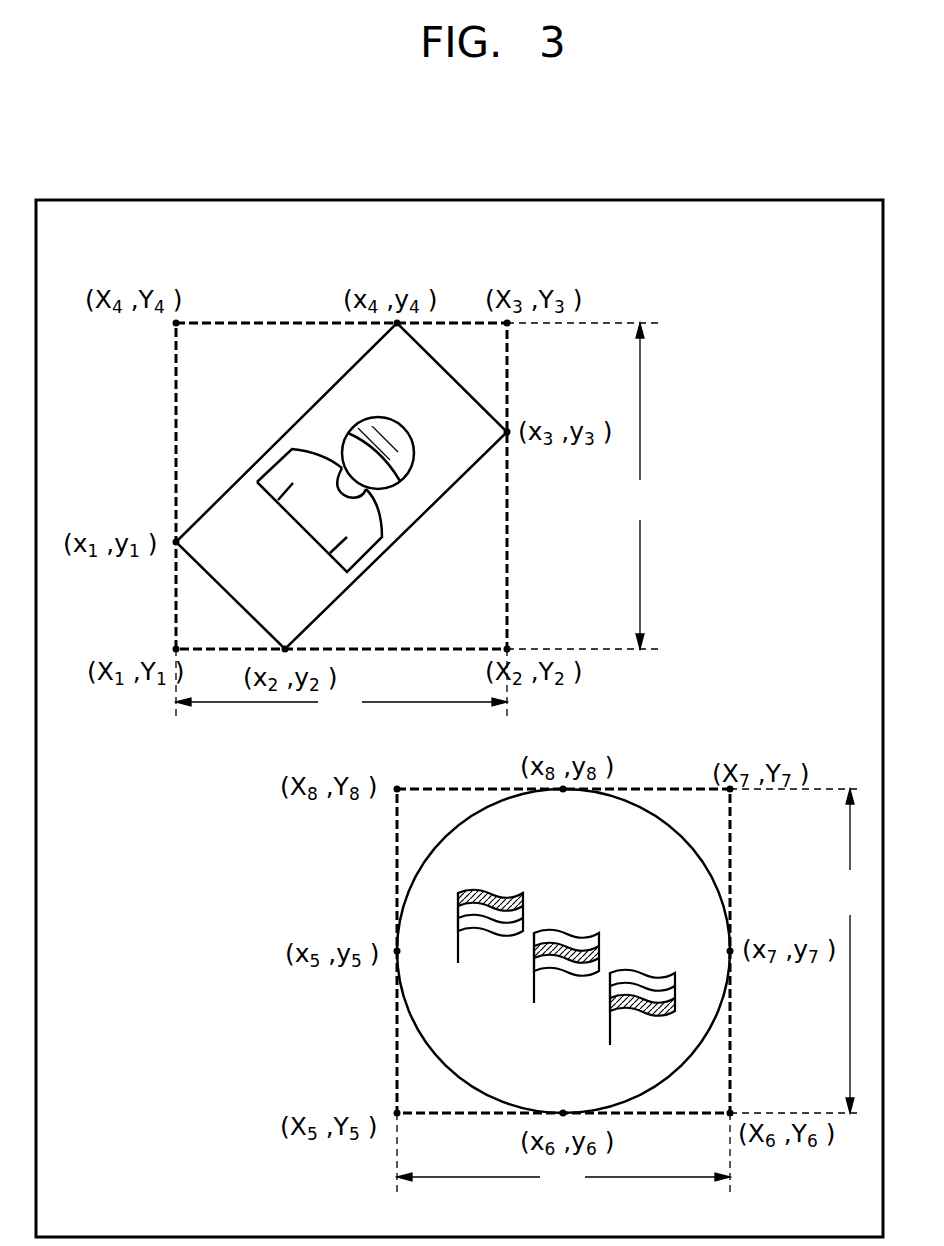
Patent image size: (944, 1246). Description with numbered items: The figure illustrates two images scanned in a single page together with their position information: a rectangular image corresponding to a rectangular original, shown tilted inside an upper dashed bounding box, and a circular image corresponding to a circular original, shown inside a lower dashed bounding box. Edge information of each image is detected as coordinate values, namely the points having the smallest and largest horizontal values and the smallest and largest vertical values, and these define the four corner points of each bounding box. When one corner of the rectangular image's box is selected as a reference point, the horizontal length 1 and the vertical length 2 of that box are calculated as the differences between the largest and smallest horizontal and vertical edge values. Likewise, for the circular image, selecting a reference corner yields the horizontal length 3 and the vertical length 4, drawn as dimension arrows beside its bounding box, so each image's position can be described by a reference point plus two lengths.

The horizontal length d1 1 is at (341, 686).
The vertical length d2 2 is at (583, 486).
The horizontal length d3 3 is at (563, 1156).
The vertical length d4 4 is at (796, 951).